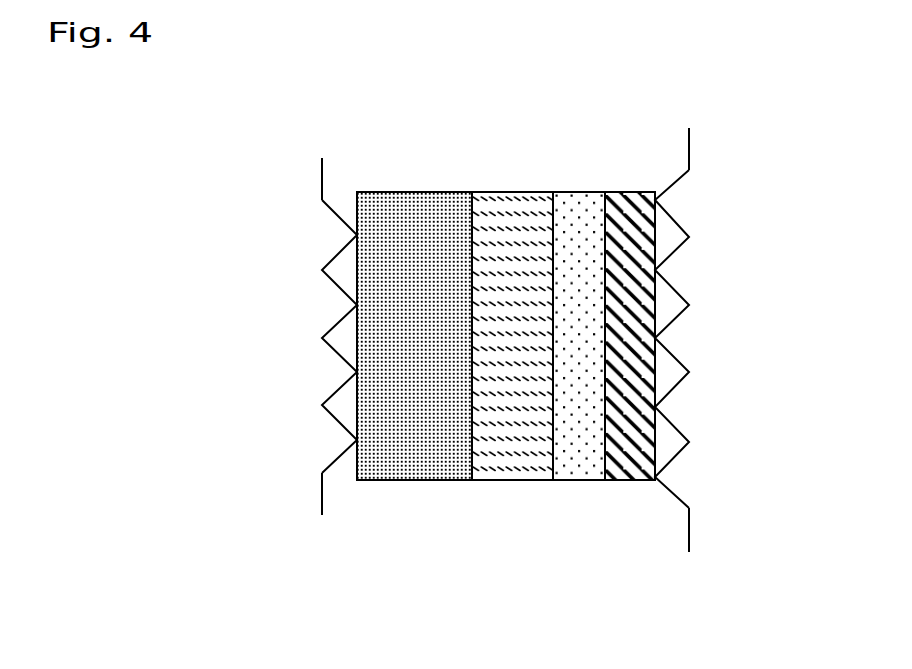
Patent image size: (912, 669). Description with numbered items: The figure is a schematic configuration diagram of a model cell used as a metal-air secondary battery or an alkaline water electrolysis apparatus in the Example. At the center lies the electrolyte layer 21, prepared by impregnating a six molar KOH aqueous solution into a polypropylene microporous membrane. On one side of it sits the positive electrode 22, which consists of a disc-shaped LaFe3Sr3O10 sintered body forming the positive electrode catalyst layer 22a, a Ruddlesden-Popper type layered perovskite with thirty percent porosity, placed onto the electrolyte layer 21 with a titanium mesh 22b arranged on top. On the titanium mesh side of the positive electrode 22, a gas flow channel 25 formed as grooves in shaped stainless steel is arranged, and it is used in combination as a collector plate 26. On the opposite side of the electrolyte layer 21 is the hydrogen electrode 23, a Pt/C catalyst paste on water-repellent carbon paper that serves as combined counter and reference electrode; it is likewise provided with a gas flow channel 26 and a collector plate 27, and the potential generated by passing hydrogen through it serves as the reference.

The electrolyte layer 21 is at (512, 463).
The positive electrode 22 is at (604, 406).
The positive electrode catalyst layer 22a is at (580, 463).
The titanium mesh 22b is at (630, 463).
The hydrogen electrode 23 is at (417, 463).
The gas flow channel 25 is at (668, 312).
The collector plate / gas flow channel 26 is at (341, 345).
The collector plate 27 is at (322, 178).